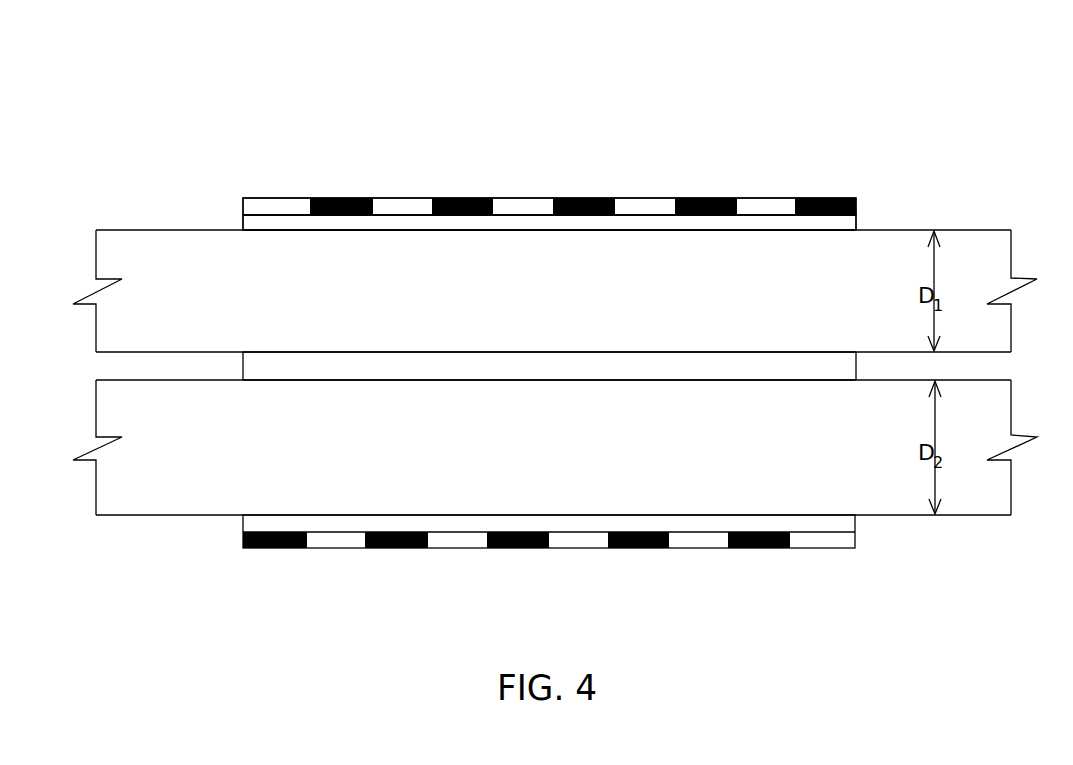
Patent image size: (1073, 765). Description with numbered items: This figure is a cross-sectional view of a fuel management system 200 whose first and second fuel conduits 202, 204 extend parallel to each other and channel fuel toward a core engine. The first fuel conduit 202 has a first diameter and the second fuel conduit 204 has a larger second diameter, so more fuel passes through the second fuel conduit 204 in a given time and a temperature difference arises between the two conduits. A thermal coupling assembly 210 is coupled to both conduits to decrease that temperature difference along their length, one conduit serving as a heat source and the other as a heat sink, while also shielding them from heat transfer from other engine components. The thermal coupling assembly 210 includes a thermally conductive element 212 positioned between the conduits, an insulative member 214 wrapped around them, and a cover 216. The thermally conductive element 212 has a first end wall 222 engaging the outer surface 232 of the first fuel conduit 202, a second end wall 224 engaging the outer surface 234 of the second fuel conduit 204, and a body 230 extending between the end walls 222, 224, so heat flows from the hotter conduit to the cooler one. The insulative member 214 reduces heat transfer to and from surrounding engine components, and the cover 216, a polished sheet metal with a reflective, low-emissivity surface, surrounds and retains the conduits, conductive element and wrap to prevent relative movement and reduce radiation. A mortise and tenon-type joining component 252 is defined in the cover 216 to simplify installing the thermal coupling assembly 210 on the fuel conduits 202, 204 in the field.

The fuel management system 200 is at (178, 115).
The first fuel conduit 202 is at (145, 248).
The second fuel conduit 204 is at (145, 500).
The thermal coupling assembly 210 is at (417, 162).
The thermally conductive element 212 is at (850, 367).
The insulative member 214 is at (847, 223).
The cover 216 is at (858, 203).
The first end wall 222 is at (387, 352).
The second end wall 224 is at (477, 380).
The body 230 is at (631, 378).
The outer surface of first fuel conduit 232 is at (335, 352).
The outer surface of second fuel conduit 234 is at (340, 381).
The joining component 252 is at (672, 180).